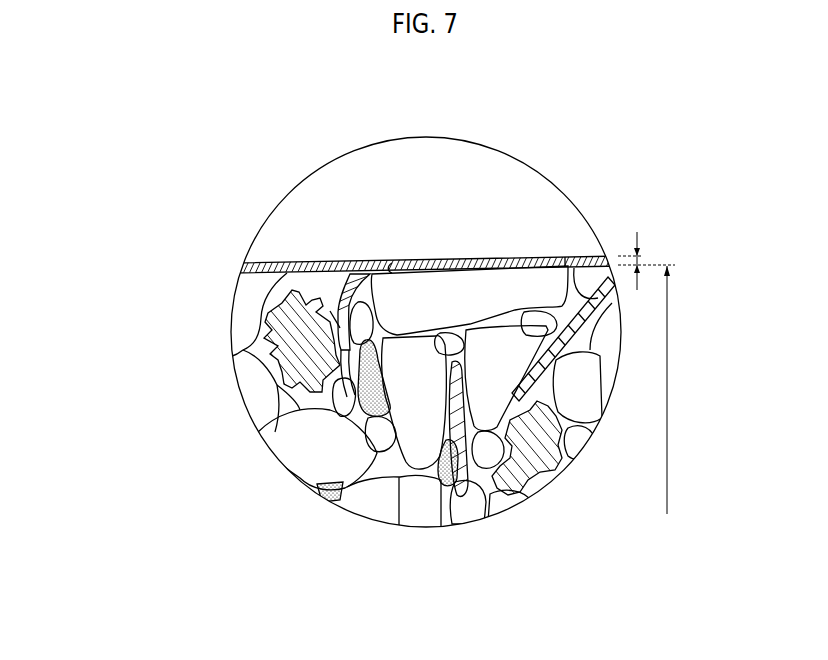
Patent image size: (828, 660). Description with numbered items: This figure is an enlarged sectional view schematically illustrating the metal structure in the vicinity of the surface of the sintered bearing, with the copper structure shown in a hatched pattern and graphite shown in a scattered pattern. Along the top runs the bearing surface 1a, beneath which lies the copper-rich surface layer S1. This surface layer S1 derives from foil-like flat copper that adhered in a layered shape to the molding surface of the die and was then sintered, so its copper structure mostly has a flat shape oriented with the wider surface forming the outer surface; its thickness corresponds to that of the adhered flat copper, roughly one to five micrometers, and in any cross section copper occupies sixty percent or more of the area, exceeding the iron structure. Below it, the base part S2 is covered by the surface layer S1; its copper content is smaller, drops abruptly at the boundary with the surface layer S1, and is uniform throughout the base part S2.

The bearing surface 1a is at (470, 256).
The surface layer S1 is at (642, 248).
The base part S2 is at (655, 390).